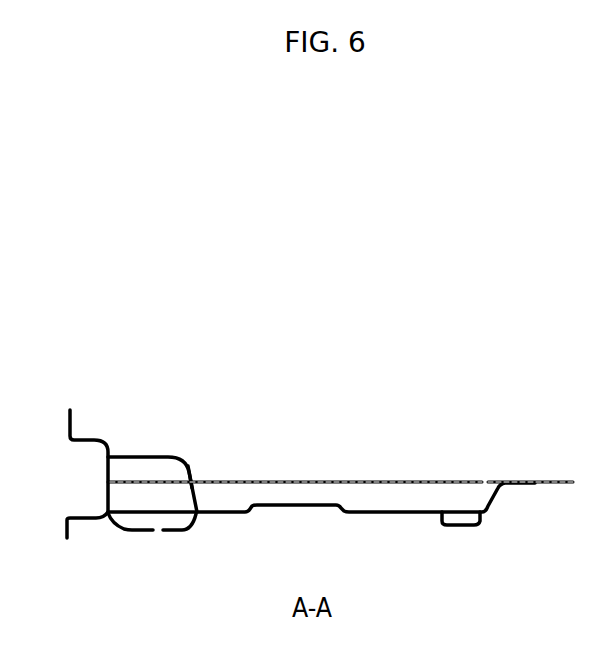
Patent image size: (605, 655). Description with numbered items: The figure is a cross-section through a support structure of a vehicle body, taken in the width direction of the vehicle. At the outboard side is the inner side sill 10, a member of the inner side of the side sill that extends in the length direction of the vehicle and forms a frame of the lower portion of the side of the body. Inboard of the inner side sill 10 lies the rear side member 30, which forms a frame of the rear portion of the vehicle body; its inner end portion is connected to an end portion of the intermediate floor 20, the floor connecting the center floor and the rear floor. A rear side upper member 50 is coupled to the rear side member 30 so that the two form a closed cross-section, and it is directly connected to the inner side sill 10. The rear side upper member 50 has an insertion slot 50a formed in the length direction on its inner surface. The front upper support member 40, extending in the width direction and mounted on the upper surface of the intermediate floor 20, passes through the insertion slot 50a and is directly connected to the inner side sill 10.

The inner side sill 10 is at (93, 512).
The intermediate floor 20 is at (370, 516).
The rear side member 30 is at (140, 534).
The front upper support member 40 is at (349, 480).
The rear side upper member 50 is at (143, 455).
The insertion slot 50a is at (193, 475).